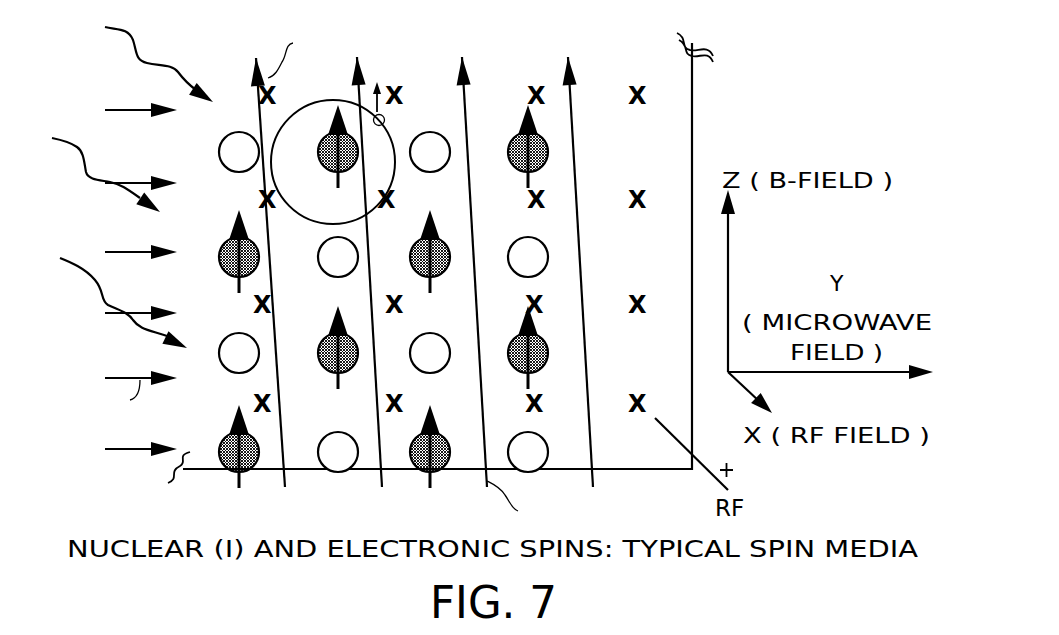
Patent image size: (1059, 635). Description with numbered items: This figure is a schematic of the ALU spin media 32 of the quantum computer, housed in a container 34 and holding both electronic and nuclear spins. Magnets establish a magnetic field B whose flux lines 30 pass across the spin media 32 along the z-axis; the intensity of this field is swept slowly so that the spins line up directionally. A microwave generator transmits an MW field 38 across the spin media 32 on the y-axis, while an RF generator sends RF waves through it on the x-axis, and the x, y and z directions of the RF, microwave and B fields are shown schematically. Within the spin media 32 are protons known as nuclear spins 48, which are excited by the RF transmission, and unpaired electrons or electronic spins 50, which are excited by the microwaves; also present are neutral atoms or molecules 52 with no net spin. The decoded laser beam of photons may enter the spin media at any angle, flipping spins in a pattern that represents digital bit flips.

The flux lines 30 is at (467, 108).
The spin media 32 is at (240, 213).
The container 34 is at (693, 112).
The MW field 38 is at (128, 30).
The nuclear spins 48 is at (318, 150).
The electronic spins 50 is at (383, 123).
The neutral atoms or molecules 52 is at (237, 370).